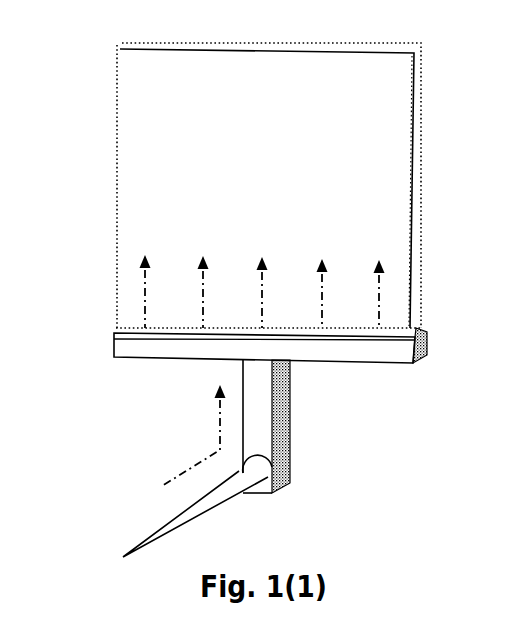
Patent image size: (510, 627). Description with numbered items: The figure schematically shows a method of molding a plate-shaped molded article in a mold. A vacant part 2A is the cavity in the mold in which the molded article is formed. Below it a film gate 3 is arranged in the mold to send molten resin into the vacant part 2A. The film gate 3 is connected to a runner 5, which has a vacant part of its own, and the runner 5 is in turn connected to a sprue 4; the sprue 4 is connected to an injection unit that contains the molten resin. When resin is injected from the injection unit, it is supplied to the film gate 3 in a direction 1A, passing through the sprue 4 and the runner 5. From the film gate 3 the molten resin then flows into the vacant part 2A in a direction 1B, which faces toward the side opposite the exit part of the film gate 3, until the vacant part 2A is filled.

The vacant part 2A is at (142, 147).
The direction 1B is at (262, 291).
The film gate 3 is at (418, 339).
The runner 5 is at (306, 438).
The sprue 4 is at (205, 530).
The direction 1A is at (193, 435).